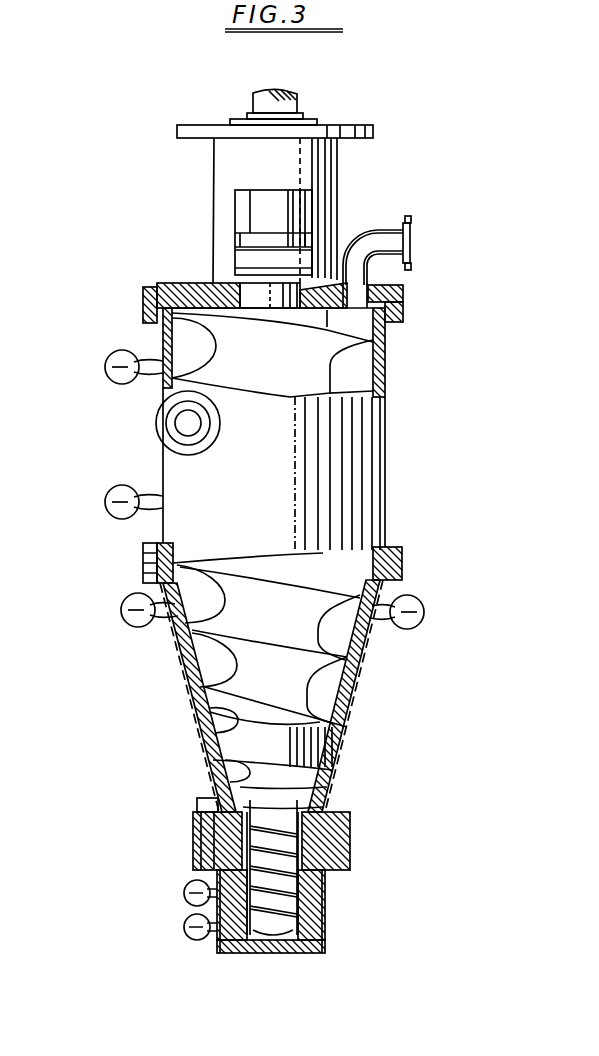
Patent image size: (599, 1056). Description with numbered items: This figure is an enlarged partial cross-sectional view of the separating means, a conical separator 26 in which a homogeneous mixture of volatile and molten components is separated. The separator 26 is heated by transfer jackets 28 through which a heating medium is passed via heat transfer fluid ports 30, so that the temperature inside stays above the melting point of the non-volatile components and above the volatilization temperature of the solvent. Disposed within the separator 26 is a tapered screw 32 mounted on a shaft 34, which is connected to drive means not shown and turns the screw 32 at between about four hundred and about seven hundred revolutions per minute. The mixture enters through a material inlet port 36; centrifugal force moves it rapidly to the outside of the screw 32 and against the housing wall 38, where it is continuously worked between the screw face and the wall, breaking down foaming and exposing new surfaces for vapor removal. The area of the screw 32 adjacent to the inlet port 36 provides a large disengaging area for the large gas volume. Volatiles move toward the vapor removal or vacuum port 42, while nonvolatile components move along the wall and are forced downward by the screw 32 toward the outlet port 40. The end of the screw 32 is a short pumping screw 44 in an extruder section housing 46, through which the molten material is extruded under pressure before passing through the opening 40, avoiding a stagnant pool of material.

The conical separator 26 is at (203, 190).
The shaft 34 is at (292, 105).
The vapor removal or vacuum port 42 is at (407, 248).
The tapered screw 32 is at (350, 343).
The housing wall 38 is at (386, 379).
The material inlet port 36 is at (123, 378).
The heat transfer fluid ports 30 is at (120, 520).
The transfer jackets 28 is at (192, 637).
The extruder section housing 46 is at (332, 864).
The short pumping screw 44 is at (226, 955).
The outlet port 40 is at (273, 955).